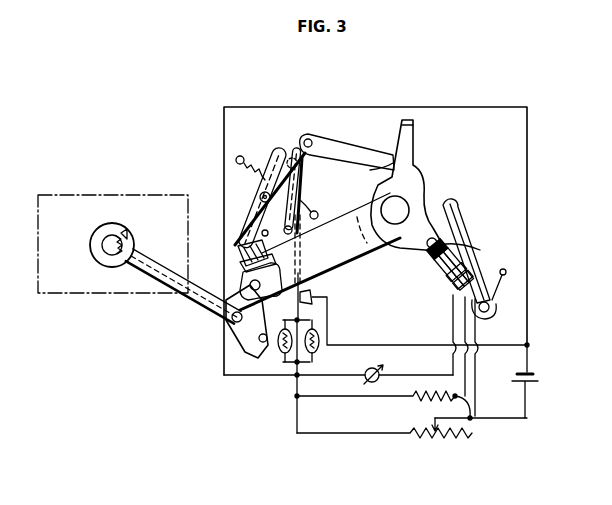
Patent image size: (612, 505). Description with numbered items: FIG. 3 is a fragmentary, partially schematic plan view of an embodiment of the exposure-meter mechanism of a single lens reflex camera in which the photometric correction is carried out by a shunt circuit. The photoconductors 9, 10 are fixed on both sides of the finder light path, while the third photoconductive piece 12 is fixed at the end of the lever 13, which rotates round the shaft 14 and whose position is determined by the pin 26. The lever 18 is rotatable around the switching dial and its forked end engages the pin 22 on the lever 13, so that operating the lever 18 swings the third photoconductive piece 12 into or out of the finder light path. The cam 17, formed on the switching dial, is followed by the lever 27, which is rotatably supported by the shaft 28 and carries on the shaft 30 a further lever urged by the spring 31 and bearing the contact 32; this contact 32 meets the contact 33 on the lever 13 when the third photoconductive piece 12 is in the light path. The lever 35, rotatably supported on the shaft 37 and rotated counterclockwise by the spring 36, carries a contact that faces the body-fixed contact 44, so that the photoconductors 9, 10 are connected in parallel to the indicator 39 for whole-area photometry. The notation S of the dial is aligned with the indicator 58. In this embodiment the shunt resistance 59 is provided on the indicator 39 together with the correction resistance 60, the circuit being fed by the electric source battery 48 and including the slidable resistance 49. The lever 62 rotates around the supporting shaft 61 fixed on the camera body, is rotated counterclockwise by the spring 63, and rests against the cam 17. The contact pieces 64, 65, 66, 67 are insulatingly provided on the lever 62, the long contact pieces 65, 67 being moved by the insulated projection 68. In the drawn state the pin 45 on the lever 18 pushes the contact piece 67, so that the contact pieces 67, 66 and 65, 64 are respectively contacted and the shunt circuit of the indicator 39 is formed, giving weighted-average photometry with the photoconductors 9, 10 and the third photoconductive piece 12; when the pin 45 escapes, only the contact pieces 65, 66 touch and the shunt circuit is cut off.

The photoconductor 9 is at (315, 350).
The photoconductor 10 is at (283, 348).
The third photoconductive piece 12 is at (118, 258).
The lever 13 is at (163, 294).
The shaft 14 is at (230, 325).
The cam 17 is at (390, 248).
The lever 18 is at (351, 255).
The pin 22 is at (247, 284).
The pin 26 is at (263, 334).
The lever 27 is at (370, 152).
The shaft 28 is at (306, 139).
The shaft 30 is at (262, 195).
The spring 31 is at (301, 301).
The contact 32 is at (238, 252).
The contact 33 is at (245, 268).
The lever 35 is at (310, 235).
The spring 36 is at (312, 212).
The shaft 37 is at (298, 268).
The indicator 39 is at (370, 368).
The contact 44 is at (313, 296).
The pin 45 is at (460, 230).
The electric source battery 48 is at (535, 383).
The slidable resistance 49 is at (428, 437).
The indicator 58 is at (420, 180).
The shunt resistance 59 is at (419, 398).
The correction resistance 60 is at (472, 414).
The supporting shaft 61 is at (489, 312).
The lever 62 is at (470, 232).
The spring 63 is at (504, 280).
The contact piece 64 is at (428, 273).
The contact piece 65 is at (440, 287).
The contact piece 66 is at (450, 293).
The contact piece 67 is at (480, 250).
The insulated projection 68 is at (425, 258).